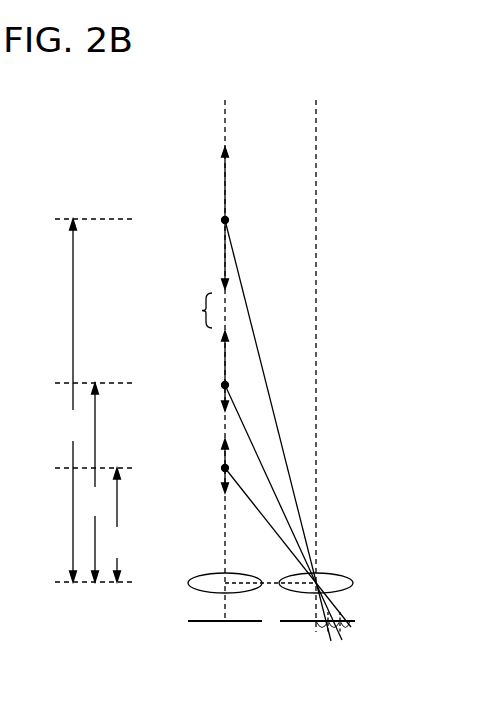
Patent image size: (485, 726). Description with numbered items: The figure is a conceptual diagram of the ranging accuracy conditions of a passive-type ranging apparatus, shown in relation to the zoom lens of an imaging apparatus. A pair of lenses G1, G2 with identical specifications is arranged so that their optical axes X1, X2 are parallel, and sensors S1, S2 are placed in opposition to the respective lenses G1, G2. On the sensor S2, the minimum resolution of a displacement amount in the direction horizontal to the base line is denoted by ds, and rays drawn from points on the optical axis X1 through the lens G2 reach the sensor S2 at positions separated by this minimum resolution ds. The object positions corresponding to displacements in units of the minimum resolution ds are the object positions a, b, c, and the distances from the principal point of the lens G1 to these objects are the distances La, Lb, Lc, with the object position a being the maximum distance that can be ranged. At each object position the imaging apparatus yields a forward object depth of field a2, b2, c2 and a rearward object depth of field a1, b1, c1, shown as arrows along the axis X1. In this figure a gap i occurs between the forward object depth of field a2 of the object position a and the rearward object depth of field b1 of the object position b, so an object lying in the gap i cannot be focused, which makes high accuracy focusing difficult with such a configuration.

The optical axis X1 is at (229, 342).
The optical axis X2 is at (311, 347).
The object position a is at (277, 417).
The object position b is at (282, 499).
The object position c is at (287, 536).
The rearward object depth of field a1 is at (209, 183).
The forward object depth of field a2 is at (209, 254).
The gap i is at (200, 310).
The rearward object depth of field b1 is at (209, 358).
The forward object depth of field b2 is at (209, 398).
The rearward object depth of field c1 is at (209, 453).
The forward object depth of field c2 is at (209, 480).
The lens G1 is at (233, 583).
The lens G2 is at (337, 583).
The sensor S1 is at (206, 621).
The sensor S2 is at (336, 621).
The minimum resolution ds is at (320, 628).
The distance La is at (95, 400).
The distance Lb is at (94, 482).
The distance Lc is at (94, 525).